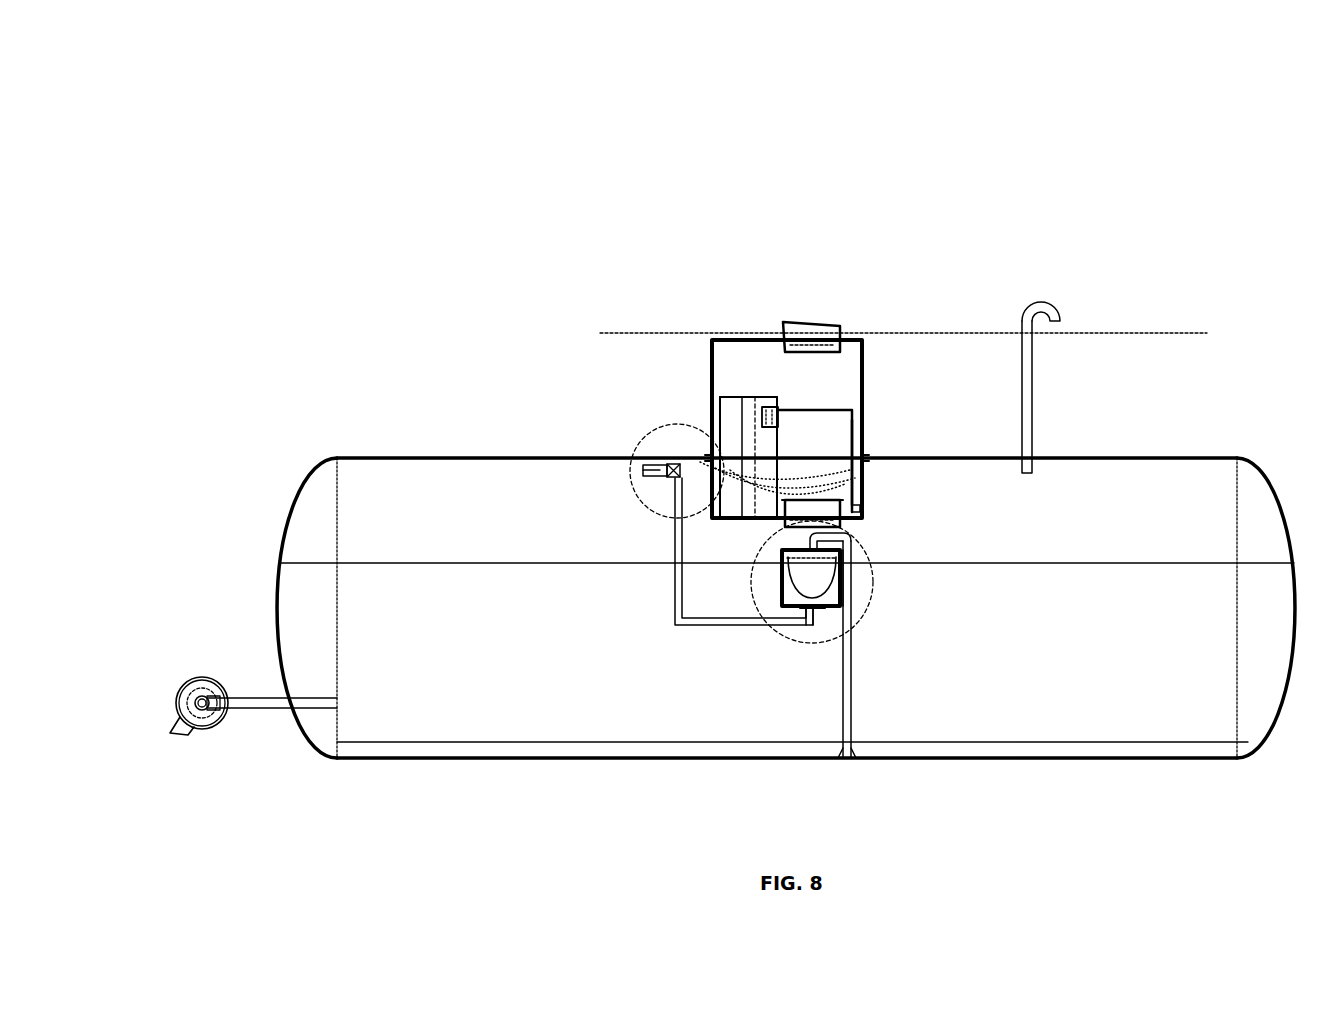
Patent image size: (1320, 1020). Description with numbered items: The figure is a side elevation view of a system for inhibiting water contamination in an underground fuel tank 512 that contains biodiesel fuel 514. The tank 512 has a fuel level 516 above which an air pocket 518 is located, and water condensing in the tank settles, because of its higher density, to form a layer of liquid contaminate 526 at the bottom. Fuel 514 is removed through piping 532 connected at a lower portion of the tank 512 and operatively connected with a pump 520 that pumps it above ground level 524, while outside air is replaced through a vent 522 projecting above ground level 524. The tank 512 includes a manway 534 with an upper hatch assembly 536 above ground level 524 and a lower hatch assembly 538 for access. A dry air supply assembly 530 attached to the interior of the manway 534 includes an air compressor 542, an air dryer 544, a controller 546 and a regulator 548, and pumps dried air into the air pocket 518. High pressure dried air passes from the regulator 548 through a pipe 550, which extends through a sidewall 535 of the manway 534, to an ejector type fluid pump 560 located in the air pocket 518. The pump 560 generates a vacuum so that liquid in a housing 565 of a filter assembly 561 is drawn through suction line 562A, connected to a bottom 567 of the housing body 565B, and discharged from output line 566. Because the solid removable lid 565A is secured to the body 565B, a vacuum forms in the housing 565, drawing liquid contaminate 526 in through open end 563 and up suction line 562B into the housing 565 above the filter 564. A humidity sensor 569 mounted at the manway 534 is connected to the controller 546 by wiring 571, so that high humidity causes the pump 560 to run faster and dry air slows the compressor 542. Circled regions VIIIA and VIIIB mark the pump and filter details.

The underground fuel tank 512 is at (1049, 460).
The biodiesel fuel 514 is at (297, 622).
The fuel level 516 is at (413, 562).
The air pocket 518 is at (313, 528).
The pump 520 is at (218, 727).
The vent 522 is at (1065, 298).
The ground level 524 is at (1065, 335).
The liquid contaminate 526 is at (458, 748).
The dry air supply assembly 530 is at (749, 397).
The piping 532 is at (320, 697).
The manway 534 is at (710, 363).
The sidewall 535 is at (722, 410).
The upper hatch assembly 536 is at (833, 327).
The hatch assembly 538 is at (798, 500).
The air compressor 542 is at (778, 447).
The air dryer 544 is at (712, 400).
The controller 546 is at (775, 408).
The regulator 548 is at (733, 505).
The pipe 550 is at (683, 460).
The fluid pump 560 is at (670, 467).
The filter assembly 561 is at (777, 583).
The suction line 562A is at (675, 528).
The suction line 562B is at (852, 663).
The open end 563 is at (850, 752).
The filter 564 is at (825, 593).
The housing 565 is at (852, 557).
The removable lid 565A is at (848, 545).
The body 565B is at (780, 595).
The output line 566 is at (643, 468).
The bottom 567 is at (822, 608).
The humidity sensor 569 is at (863, 505).
The wiring 571 is at (820, 410).
The detail VIIIA is at (632, 485).
The detail VIIIB is at (875, 578).